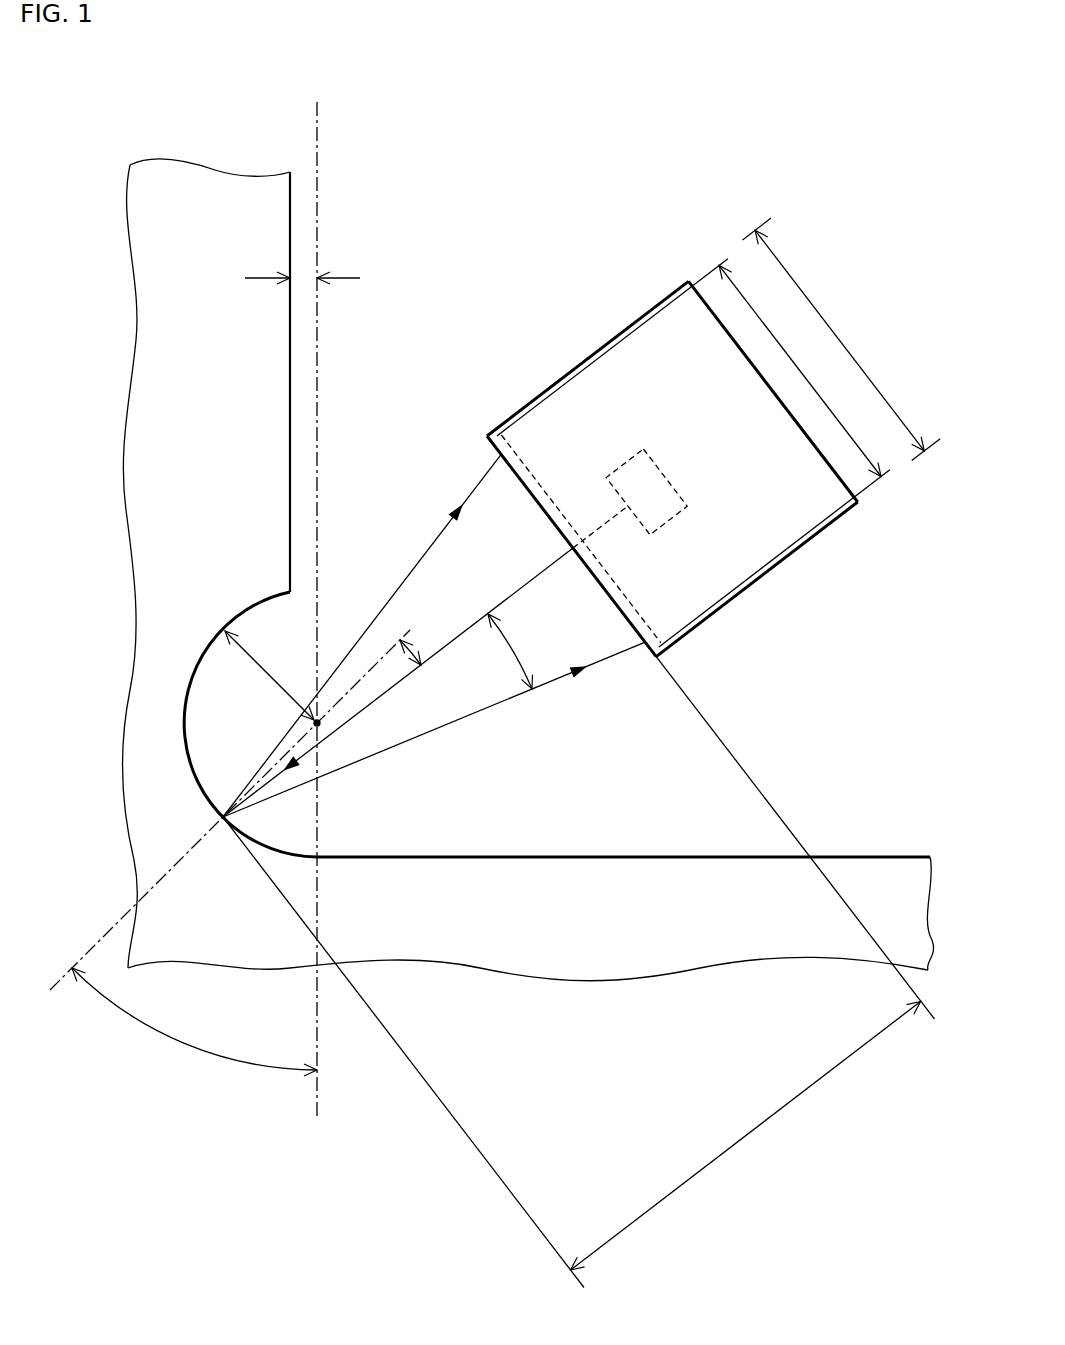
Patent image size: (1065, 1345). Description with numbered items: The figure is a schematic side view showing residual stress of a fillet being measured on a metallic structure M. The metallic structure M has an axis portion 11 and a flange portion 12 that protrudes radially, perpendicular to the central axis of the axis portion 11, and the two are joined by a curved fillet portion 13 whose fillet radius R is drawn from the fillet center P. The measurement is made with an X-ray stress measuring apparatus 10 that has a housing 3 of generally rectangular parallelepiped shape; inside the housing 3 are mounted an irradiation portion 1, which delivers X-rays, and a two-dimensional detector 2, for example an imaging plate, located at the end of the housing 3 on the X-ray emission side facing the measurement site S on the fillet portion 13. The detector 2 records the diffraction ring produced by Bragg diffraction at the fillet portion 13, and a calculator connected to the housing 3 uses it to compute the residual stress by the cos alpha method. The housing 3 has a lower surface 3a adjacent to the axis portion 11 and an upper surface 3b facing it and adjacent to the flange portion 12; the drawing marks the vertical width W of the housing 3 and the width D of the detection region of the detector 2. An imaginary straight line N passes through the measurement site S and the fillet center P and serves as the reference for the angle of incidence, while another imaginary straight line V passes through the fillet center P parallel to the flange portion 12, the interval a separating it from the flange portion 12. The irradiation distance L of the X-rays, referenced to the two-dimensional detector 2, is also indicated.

The irradiation portion 1 is at (672, 519).
The two-dimensional detector 2 is at (488, 433).
The housing 3 is at (685, 446).
The lower surface 3a is at (800, 547).
The upper surface 3b is at (635, 322).
The X-ray stress measuring apparatus 10 is at (685, 417).
The axis portion 11 is at (887, 880).
The flange portion 12 is at (262, 477).
The fillet portion 13 is at (188, 748).
The metallic structure M is at (499, 513).
The imaginary straight line V is at (318, 183).
The interval a is at (302, 263).
The vertical width of the housing W is at (842, 339).
The width of detection region D is at (800, 371).
The fillet radius R is at (269, 675).
The measurement site S is at (222, 817).
The imaginary straight line N is at (157, 877).
The fillet center P is at (320, 727).
The irradiation distance L is at (579, 972).